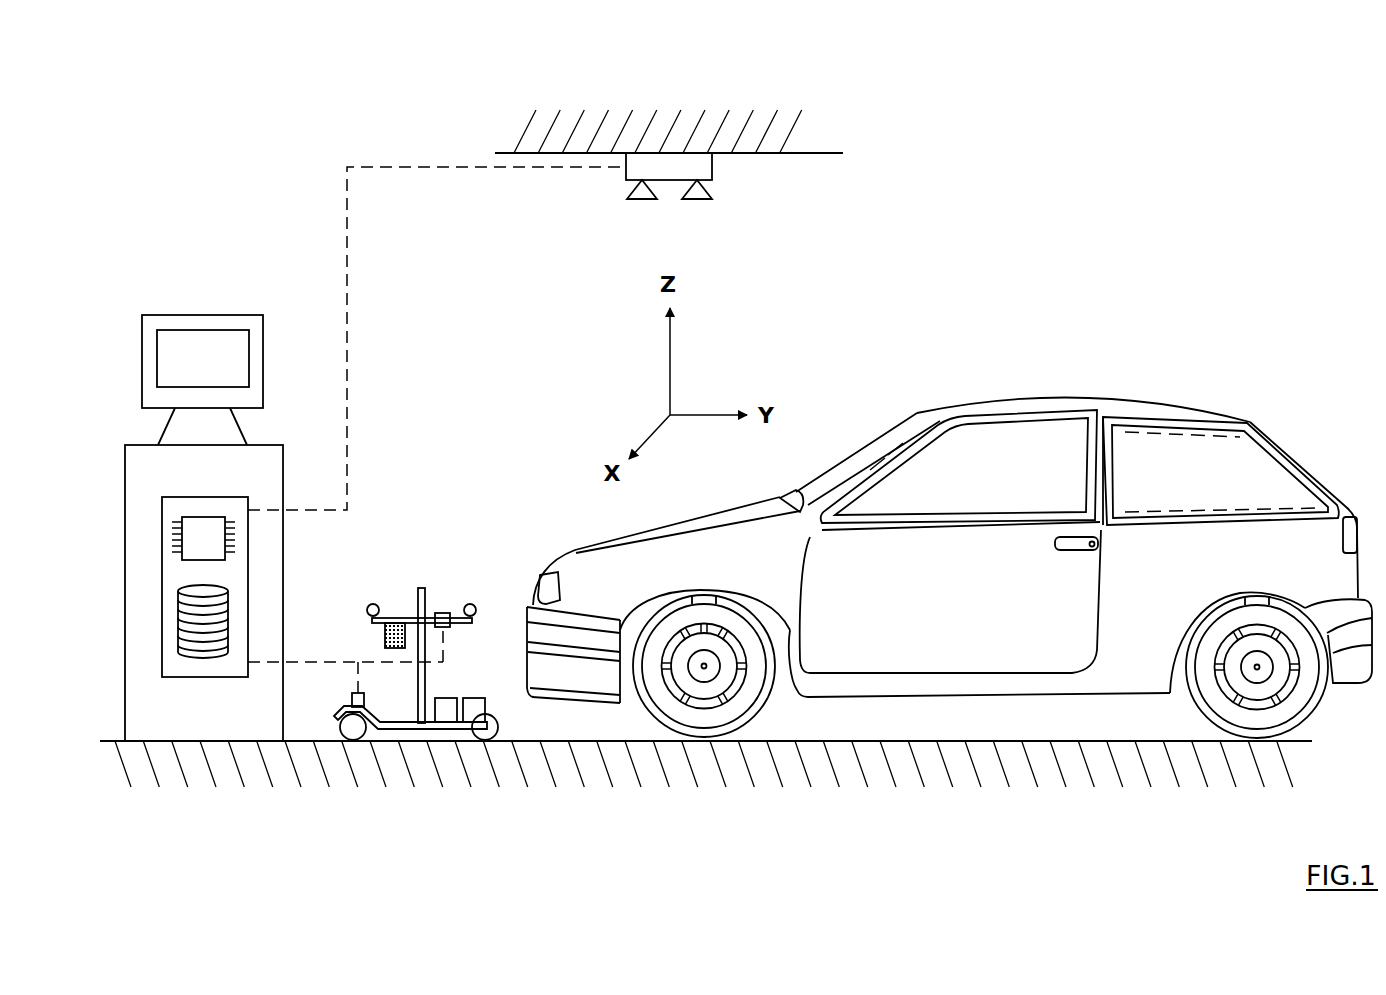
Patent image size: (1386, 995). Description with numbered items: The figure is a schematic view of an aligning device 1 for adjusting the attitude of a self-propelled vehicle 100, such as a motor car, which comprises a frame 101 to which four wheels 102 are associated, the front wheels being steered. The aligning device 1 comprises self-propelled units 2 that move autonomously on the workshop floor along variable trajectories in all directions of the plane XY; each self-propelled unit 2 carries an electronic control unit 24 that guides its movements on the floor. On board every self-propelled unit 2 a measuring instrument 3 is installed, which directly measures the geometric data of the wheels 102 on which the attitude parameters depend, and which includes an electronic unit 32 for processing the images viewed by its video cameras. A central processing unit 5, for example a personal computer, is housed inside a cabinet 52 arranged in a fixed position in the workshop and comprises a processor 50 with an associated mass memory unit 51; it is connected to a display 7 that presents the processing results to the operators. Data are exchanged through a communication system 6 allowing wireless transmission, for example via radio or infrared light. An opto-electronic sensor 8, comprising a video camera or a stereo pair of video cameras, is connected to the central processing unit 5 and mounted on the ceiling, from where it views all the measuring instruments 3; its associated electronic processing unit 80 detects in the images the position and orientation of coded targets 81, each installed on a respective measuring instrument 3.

The aligning device 1 is at (201, 235).
The self-propelled unit 2 is at (421, 736).
The measuring instrument 3 is at (465, 597).
The central processing unit 5 is at (160, 591).
The communication system 6 is at (312, 662).
The display 7 is at (162, 320).
The opto-electronic sensor 8 is at (702, 248).
The electronic control unit 24 is at (350, 704).
The electronic unit 32 is at (448, 627).
The processor 50 is at (193, 539).
The mass memory unit 51 is at (205, 636).
The cabinet 52 is at (130, 478).
The electronic processing unit 80 is at (712, 168).
The coded target 81 is at (402, 623).
The self-propelled vehicle 100 is at (949, 597).
The frame 101 is at (983, 685).
The wheel 102 is at (697, 735).